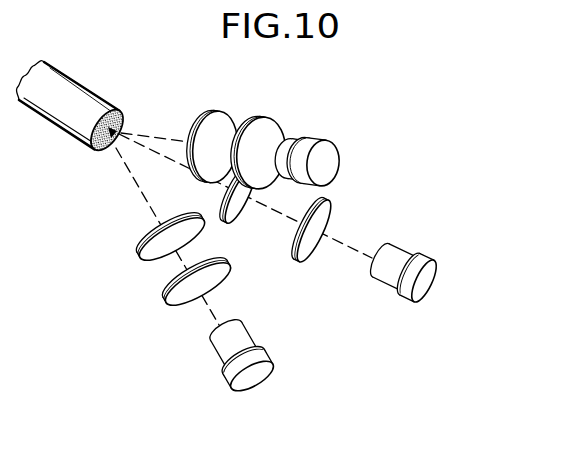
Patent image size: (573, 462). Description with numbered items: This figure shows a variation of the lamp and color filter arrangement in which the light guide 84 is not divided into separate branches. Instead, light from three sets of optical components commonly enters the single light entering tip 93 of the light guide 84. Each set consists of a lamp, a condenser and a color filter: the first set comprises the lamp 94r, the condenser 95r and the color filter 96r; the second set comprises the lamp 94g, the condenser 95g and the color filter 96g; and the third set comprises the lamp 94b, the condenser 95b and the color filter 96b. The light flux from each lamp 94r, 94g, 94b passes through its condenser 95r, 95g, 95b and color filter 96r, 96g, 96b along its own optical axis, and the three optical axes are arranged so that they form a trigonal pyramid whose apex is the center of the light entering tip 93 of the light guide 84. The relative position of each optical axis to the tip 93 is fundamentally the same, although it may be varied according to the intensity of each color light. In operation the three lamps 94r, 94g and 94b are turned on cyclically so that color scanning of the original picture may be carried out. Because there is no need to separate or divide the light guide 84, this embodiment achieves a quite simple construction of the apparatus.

The light guide 84 is at (78, 90).
The light entering tip 93 is at (121, 110).
The condenser 95r is at (212, 110).
The color filter 96r is at (266, 117).
The lamp 94r is at (320, 137).
The condenser 95b is at (139, 253).
The color filter 96b is at (166, 299).
The lamp 94b is at (211, 356).
The condenser 95g is at (243, 222).
The color filter 96g is at (315, 266).
The lamp 94g is at (404, 306).